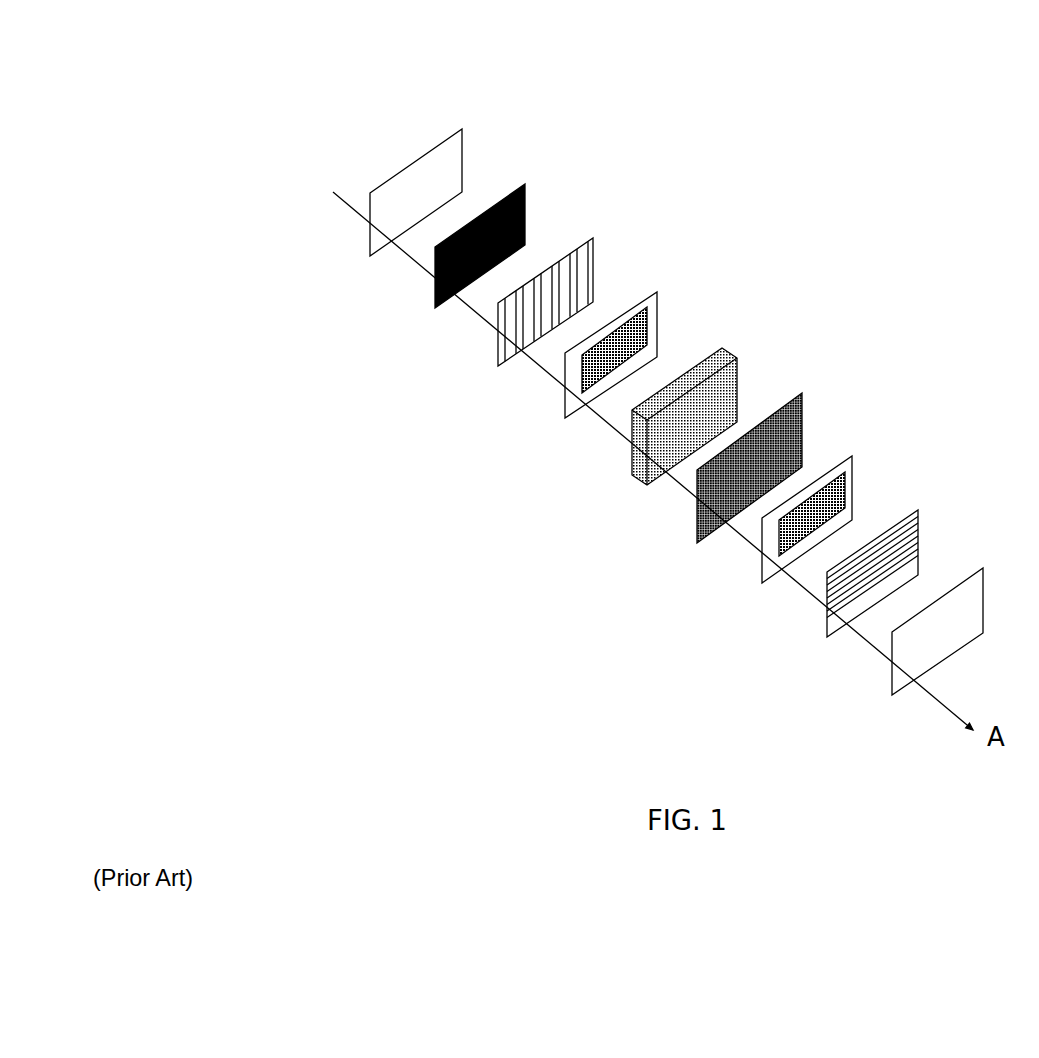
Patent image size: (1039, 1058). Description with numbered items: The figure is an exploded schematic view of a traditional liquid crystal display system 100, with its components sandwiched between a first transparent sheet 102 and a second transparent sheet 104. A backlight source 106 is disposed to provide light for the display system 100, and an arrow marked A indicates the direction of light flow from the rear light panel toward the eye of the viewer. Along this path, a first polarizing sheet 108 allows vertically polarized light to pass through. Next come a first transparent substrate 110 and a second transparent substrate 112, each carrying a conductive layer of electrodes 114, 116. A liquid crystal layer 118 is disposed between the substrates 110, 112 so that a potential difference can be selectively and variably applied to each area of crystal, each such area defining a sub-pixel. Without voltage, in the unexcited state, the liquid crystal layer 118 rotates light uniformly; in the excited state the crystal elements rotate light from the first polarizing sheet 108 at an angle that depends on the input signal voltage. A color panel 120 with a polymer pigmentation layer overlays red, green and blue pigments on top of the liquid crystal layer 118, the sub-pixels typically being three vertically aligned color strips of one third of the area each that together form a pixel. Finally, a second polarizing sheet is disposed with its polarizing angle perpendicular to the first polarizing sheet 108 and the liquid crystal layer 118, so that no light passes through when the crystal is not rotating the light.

The liquid crystal display system 100 is at (277, 136).
The first transparent sheet 102 is at (370, 257).
The second transparent sheet 104 is at (892, 695).
The backlight source 106 is at (435, 308).
The first polarizing sheet 108 is at (498, 366).
The first transparent substrate 110 is at (565, 418).
The second transparent substrate 112 is at (762, 583).
The conductive layer of electrodes 114 is at (658, 332).
The conductive layer of electrodes 116 is at (855, 495).
The liquid crystal layer 118 is at (640, 484).
The color panel 120 is at (697, 543).